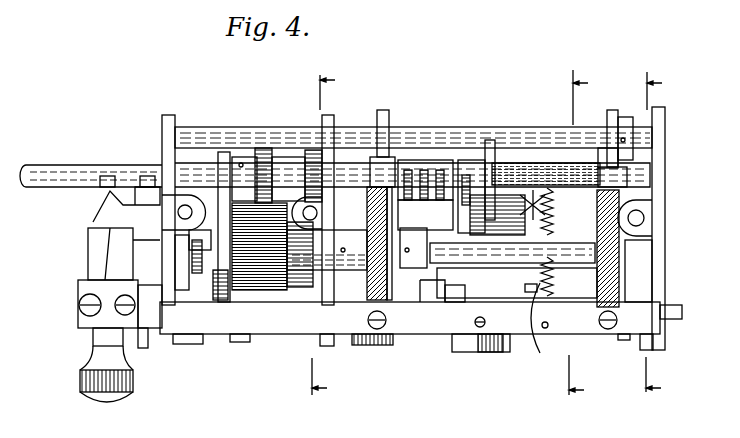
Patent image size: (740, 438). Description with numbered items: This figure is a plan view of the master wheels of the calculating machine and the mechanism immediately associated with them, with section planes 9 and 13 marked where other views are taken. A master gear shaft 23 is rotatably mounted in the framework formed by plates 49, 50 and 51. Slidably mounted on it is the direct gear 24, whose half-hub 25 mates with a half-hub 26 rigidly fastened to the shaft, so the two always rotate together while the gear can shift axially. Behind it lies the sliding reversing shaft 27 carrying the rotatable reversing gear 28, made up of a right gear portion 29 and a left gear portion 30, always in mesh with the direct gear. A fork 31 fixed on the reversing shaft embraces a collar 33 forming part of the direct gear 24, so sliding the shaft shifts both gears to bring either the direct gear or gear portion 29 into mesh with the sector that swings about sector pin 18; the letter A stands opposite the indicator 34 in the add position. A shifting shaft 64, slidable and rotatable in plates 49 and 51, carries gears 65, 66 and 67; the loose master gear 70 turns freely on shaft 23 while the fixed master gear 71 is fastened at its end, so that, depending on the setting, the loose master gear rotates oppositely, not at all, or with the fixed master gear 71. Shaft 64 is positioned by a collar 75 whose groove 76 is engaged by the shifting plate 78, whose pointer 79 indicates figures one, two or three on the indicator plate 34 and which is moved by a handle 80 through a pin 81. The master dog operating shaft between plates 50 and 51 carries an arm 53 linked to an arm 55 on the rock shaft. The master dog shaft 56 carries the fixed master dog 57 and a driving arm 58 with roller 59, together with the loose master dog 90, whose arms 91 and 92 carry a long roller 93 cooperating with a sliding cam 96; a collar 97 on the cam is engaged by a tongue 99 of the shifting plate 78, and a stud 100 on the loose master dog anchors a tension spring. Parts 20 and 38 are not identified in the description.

The section plane 9 is at (320, 236).
The section plane 13 is at (590, 68).
The sector pin 18 is at (667, 68).
The gear 20 is at (298, 290).
The master gear shaft 23 is at (512, 256).
The direct gear 24 is at (262, 292).
The half-hub 25 is at (312, 238).
The half-hub 26 is at (325, 260).
The reversing shaft 27 is at (45, 170).
The reversing gear 28 is at (283, 160).
The gear portion 29 is at (311, 152).
The gear portion 30 is at (264, 150).
The fork 31 is at (242, 165).
The collar 33 is at (195, 275).
The indicator plate 34 is at (115, 206).
The bracket plate 38 is at (218, 235).
The plate 49 is at (162, 128).
The plate 50 is at (665, 140).
The plate 51 is at (333, 122).
The arm 53 is at (555, 231).
The arm 55 is at (533, 195).
The master dog shaft 56 is at (520, 165).
The fixed master dog 57 is at (612, 175).
The driving arm 58 is at (490, 200).
The roller 59 is at (482, 233).
The shifting shaft 64 is at (523, 296).
The gear 65 is at (220, 300).
The gear 66 is at (380, 345).
The gear 67 is at (624, 340).
The loose master gear 70 is at (392, 240).
The fixed master gear 71 is at (655, 262).
The collar 75 is at (440, 285).
The groove 76 is at (432, 292).
The shifting plate 78 is at (146, 348).
The pointer 79 is at (105, 262).
The handle 80 is at (80, 297).
The pin 81 is at (78, 325).
The loose master dog 90 is at (385, 165).
The arm 91 is at (410, 160).
The arm 92 is at (462, 175).
The long roller 93 is at (425, 178).
The cam 96 is at (324, 212).
The collar 97 is at (512, 252).
The tongue 99 is at (479, 251).
The stud 100 is at (534, 326).